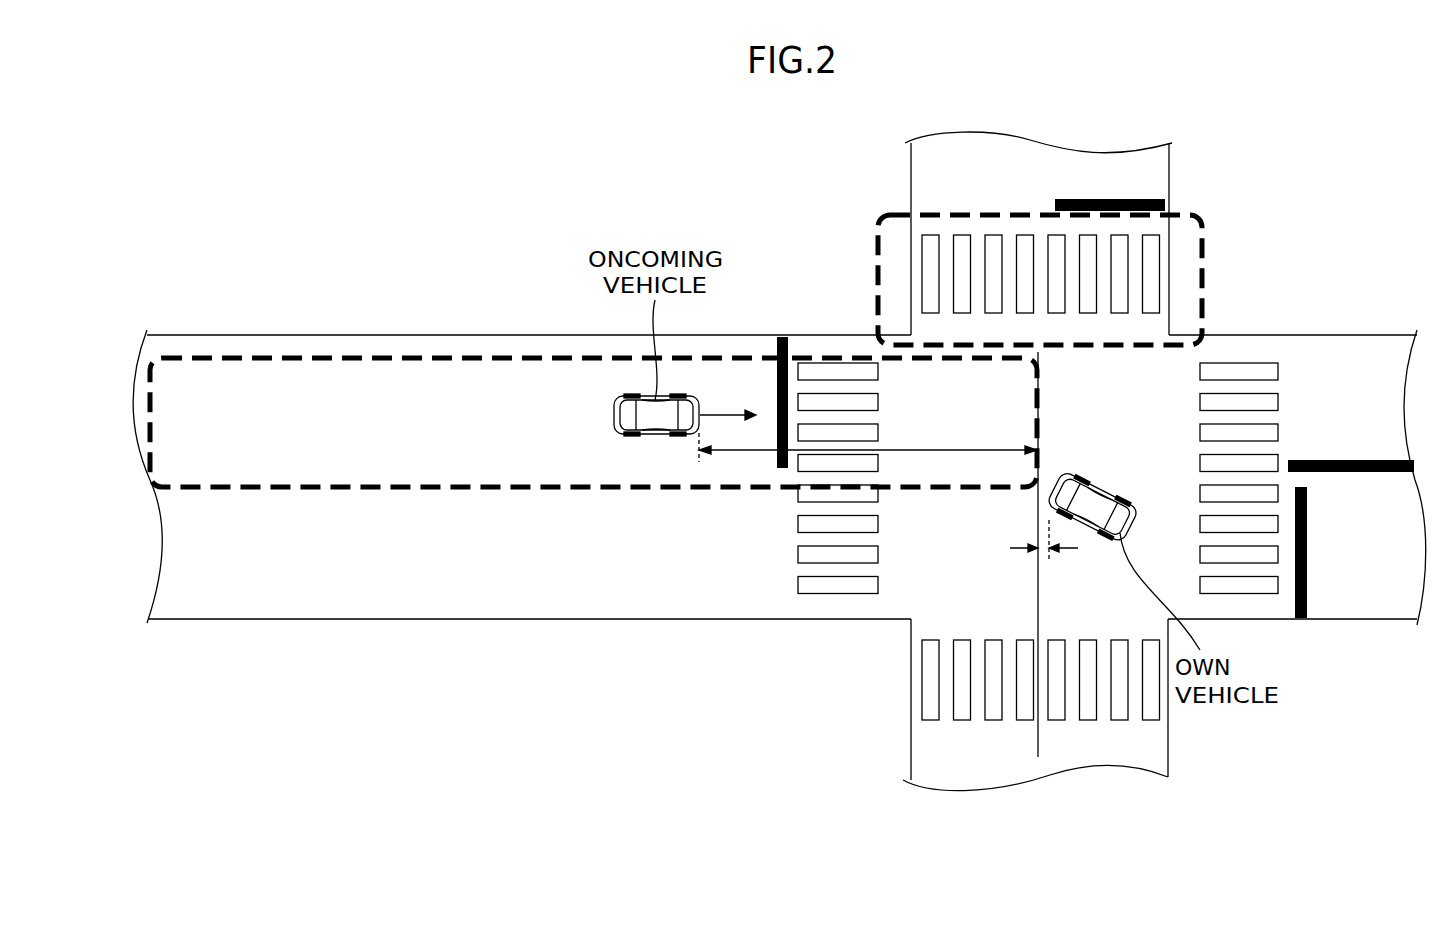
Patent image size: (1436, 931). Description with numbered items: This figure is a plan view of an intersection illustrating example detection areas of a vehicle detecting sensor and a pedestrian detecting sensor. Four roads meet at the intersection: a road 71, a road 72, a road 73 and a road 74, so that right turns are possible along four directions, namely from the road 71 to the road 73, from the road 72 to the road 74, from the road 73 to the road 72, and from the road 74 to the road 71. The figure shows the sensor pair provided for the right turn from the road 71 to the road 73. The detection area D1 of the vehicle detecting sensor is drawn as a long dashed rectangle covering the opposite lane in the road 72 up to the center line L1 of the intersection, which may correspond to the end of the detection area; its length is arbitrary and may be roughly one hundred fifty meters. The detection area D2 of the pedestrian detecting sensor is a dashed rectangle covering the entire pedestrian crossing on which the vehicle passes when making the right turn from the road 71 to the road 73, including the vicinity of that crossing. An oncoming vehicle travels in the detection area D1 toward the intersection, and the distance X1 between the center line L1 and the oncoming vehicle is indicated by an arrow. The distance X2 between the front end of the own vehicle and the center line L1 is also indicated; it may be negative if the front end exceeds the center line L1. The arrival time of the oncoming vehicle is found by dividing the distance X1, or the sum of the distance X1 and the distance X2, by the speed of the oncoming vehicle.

The road 71 is at (1362, 597).
The road 72 is at (595, 598).
The road 73 is at (933, 175).
The road 74 is at (933, 752).
The center line of the intersection L1 is at (1042, 740).
The detection area of the vehicle detecting sensor D1 is at (527, 355).
The detection area of the pedestrian detecting sensor D2 is at (878, 252).
The distance X1 is at (868, 455).
The distance X2 is at (1044, 553).